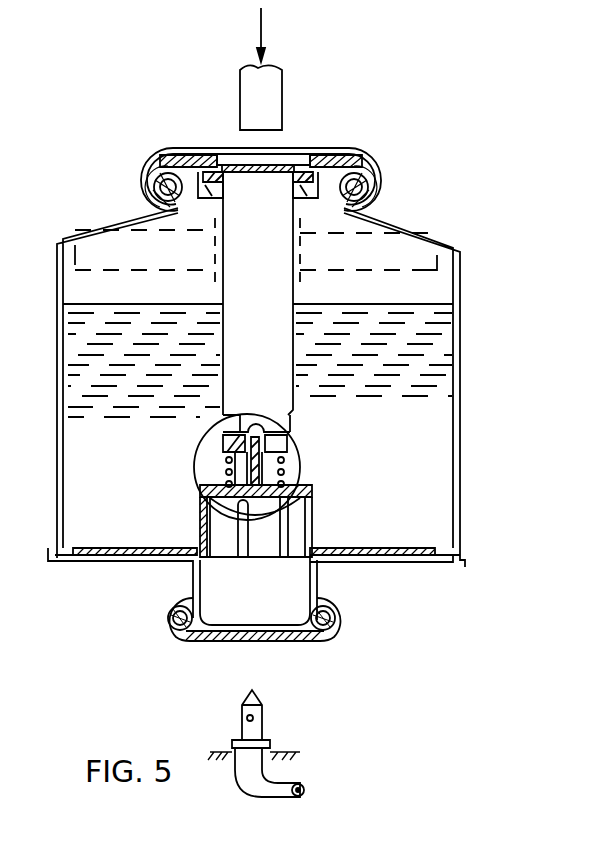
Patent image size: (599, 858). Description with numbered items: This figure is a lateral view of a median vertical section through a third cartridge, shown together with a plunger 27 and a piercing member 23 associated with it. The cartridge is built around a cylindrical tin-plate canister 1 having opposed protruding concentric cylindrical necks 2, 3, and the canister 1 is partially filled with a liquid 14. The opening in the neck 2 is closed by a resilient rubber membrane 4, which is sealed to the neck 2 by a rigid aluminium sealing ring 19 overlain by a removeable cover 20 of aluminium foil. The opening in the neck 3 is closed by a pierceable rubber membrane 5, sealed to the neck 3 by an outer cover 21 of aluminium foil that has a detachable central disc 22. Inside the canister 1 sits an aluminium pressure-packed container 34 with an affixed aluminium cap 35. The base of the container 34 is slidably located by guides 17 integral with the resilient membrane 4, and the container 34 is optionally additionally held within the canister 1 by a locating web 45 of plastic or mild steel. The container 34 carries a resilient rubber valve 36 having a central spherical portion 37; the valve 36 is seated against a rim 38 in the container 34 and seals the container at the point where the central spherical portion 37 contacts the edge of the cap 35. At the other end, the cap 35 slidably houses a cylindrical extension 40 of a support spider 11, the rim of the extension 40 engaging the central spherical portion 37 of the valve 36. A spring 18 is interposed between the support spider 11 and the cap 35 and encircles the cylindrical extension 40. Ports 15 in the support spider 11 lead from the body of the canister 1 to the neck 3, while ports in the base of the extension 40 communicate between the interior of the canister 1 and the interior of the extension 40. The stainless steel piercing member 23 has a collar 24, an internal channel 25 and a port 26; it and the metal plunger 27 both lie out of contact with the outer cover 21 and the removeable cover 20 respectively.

The canister 1 is at (470, 293).
The neck 2 is at (345, 200).
The neck 3 is at (192, 580).
The resilient membrane 4 is at (178, 162).
The pierceable membrane 5 is at (242, 630).
The support spider 11 is at (300, 496).
The liquid 14 is at (430, 331).
The ports 15 is at (345, 557).
The guides 17 is at (205, 205).
The spring 18 is at (220, 462).
The sealing ring 19 is at (352, 158).
The removeable cover 20 is at (300, 158).
The outer cover 21 is at (330, 642).
The detachable central disc 22 is at (238, 640).
The piercing member 23 is at (262, 735).
The collar 24 is at (272, 748).
The internal channel 25 is at (302, 787).
The port 26 is at (247, 718).
The plunger 27 is at (245, 97).
The pressure-packed container 34 is at (258, 293).
The cap 35 is at (297, 440).
The valve 36 is at (291, 440).
The central spherical portion 37 is at (225, 441).
The rim 38 is at (240, 417).
The cylindrical extension 40 is at (264, 472).
The locating web 45 is at (381, 265).